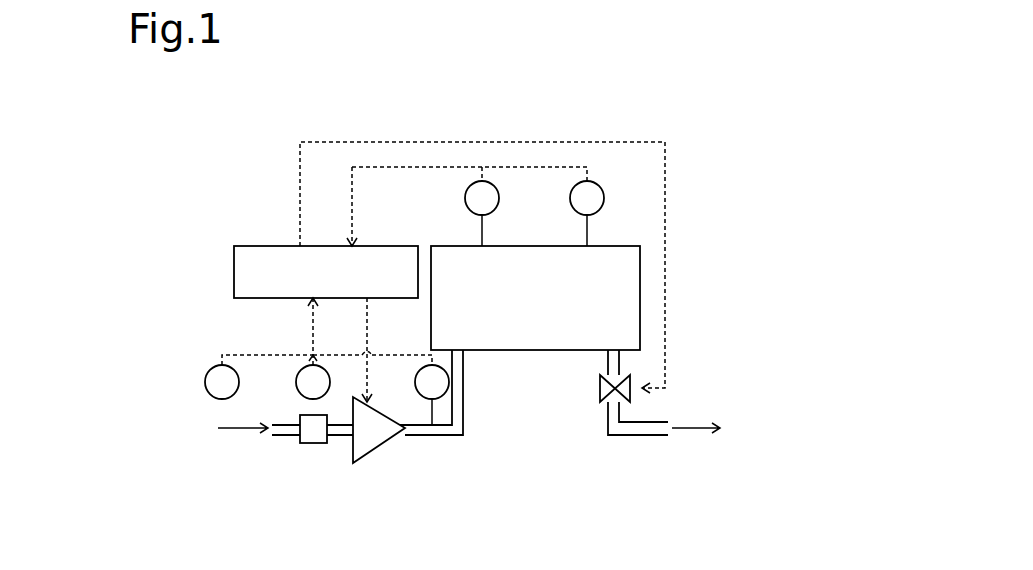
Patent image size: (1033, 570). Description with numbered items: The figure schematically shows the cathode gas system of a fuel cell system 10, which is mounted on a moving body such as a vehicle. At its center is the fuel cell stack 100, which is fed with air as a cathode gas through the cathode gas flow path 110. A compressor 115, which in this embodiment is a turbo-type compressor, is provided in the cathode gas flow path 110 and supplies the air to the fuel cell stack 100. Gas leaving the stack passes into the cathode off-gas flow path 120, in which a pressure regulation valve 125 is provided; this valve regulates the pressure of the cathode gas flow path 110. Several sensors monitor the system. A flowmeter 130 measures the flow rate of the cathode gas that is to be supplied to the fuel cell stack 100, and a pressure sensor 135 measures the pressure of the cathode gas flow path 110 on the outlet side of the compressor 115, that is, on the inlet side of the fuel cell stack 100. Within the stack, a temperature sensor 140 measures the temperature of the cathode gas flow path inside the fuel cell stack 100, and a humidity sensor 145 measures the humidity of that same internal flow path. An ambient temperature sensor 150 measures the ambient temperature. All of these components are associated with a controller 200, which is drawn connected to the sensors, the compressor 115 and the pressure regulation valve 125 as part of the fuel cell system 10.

The fuel cell system 10 is at (722, 130).
The fuel cell stack 100 is at (610, 246).
The cathode gas flow path 110 is at (463, 405).
The compressor 115 is at (377, 447).
The cathode off-gas flow path 120 is at (628, 436).
The pressure regulation valve 125 is at (598, 405).
The flowmeter 130 is at (303, 367).
The pressure sensor 135 is at (430, 362).
The temperature sensor 140 is at (499, 203).
The humidity sensor 145 is at (604, 201).
The ambient temperature sensor 150 is at (210, 367).
The controller 200 is at (364, 246).